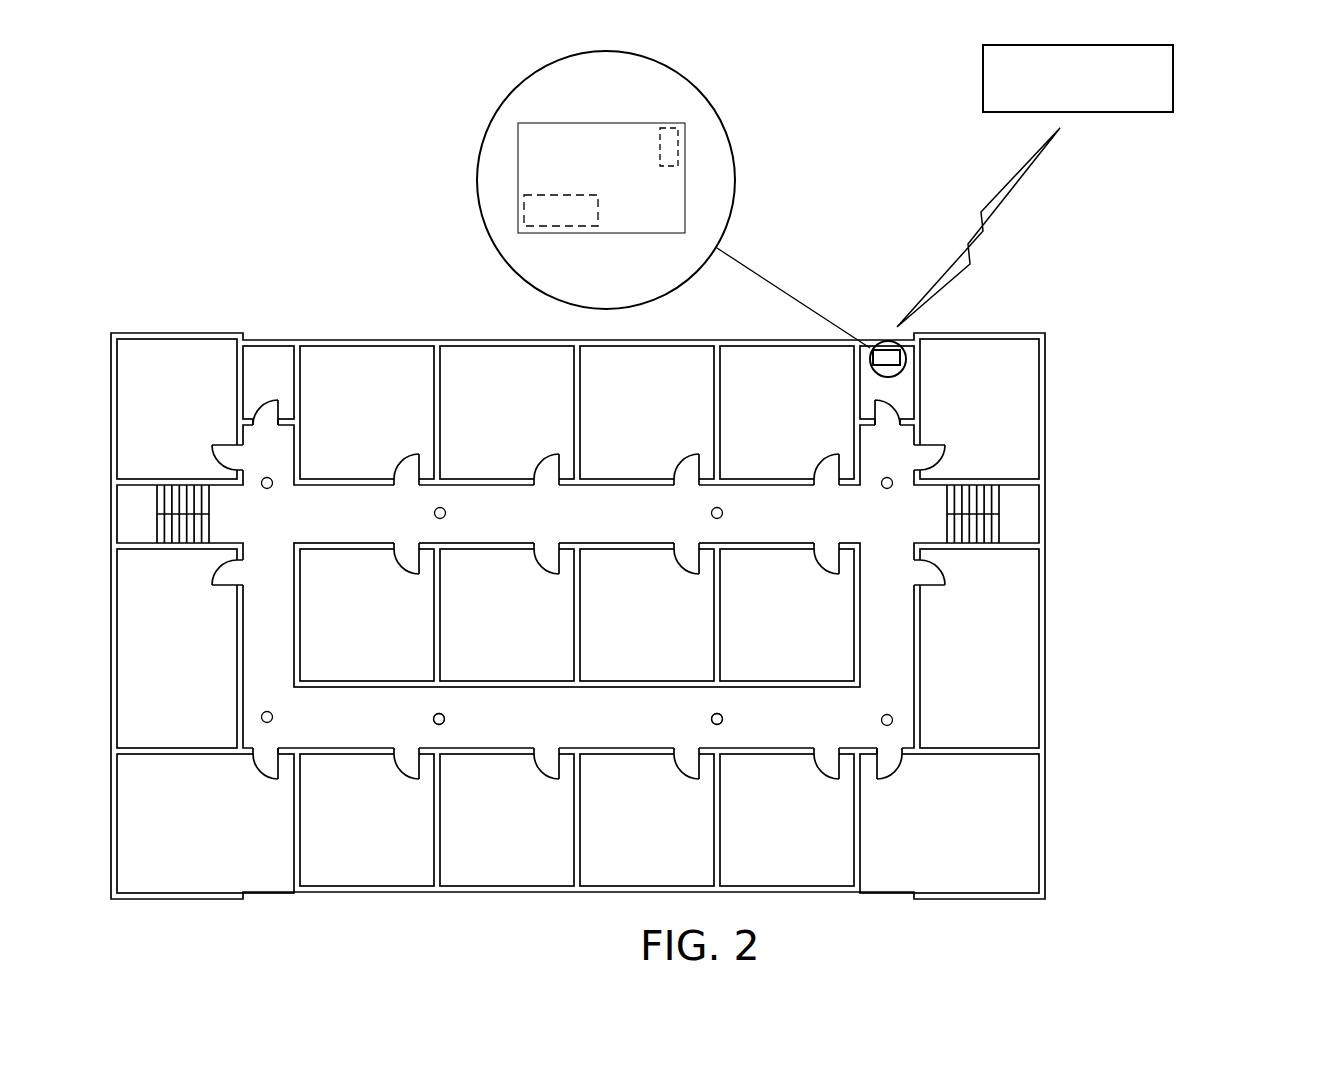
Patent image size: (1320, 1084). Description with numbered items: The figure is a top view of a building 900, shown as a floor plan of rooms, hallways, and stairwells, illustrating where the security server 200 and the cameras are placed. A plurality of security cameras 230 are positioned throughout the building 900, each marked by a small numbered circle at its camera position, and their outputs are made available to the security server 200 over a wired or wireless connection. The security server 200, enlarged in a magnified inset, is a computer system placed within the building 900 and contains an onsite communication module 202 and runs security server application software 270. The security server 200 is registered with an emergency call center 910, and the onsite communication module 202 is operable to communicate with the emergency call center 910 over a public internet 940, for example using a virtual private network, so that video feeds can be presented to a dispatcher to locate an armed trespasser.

The security server 200 is at (518, 177).
The onsite communication module 202 is at (670, 147).
The security cameras 230 is at (710, 719).
The security server application software 270 is at (535, 213).
The building 900 is at (1099, 328).
The emergency call center 910 is at (1173, 77).
The public internet 940 is at (1017, 195).